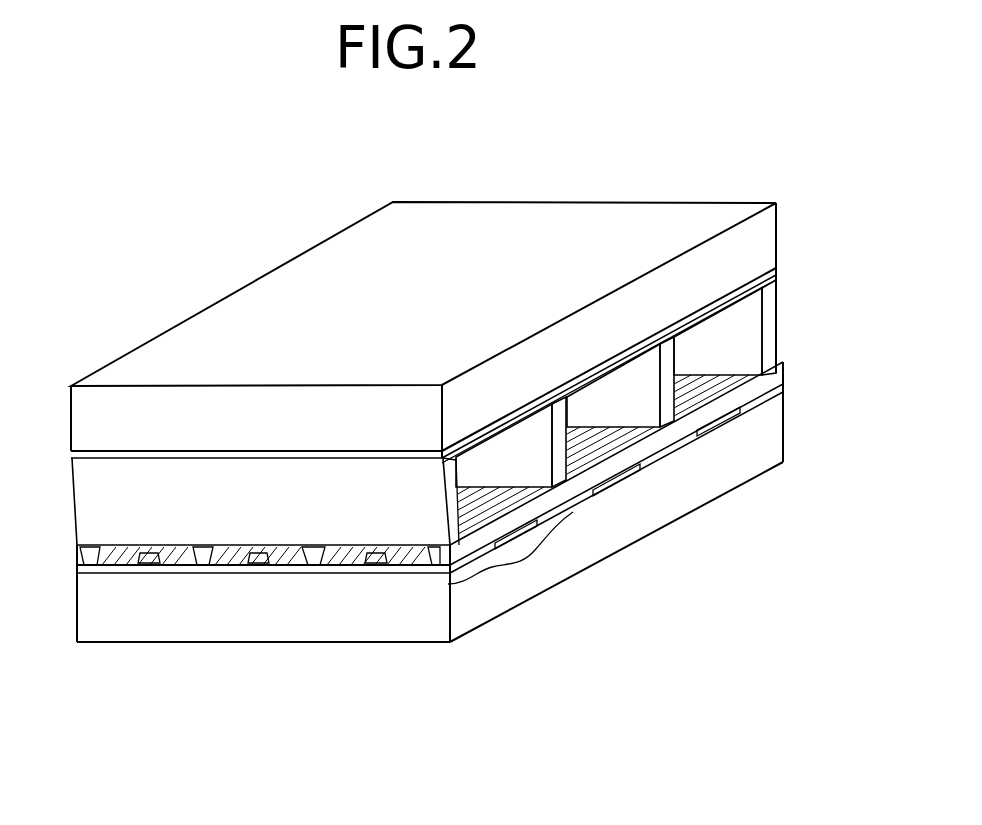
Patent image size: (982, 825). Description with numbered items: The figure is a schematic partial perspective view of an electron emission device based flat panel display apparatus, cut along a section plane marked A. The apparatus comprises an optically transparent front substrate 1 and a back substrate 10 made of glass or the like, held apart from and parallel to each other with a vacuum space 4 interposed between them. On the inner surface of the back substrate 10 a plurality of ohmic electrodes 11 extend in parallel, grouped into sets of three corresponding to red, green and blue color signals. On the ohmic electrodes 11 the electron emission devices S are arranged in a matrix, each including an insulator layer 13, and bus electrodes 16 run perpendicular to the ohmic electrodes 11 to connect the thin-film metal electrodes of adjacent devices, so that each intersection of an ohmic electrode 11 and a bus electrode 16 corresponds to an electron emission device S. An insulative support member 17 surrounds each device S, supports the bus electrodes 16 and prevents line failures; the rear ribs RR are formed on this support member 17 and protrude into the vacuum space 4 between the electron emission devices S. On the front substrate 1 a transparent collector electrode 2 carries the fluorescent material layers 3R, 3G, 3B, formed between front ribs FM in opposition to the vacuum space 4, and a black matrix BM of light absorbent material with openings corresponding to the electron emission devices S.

The front substrate 1 is at (753, 205).
The collector electrode 2 is at (777, 267).
The fluorescent material layer (red) 3R is at (507, 437).
The fluorescent material layer (green) 3G is at (612, 377).
The fluorescent material layer (blue) 3B is at (707, 323).
The vacuum space 4 is at (738, 357).
The black matrix BM is at (777, 275).
The filter matrix layer FM is at (768, 335).
The rear rib RR is at (777, 375).
The insulative support member 17 is at (782, 388).
The back substrate 10 is at (775, 447).
The ohmic electrode 11 is at (632, 470).
The insulator layer 13 is at (352, 565).
The bus electrode 16 is at (253, 565).
The electron emission device S is at (528, 570).
The section line A- A is at (500, 230).